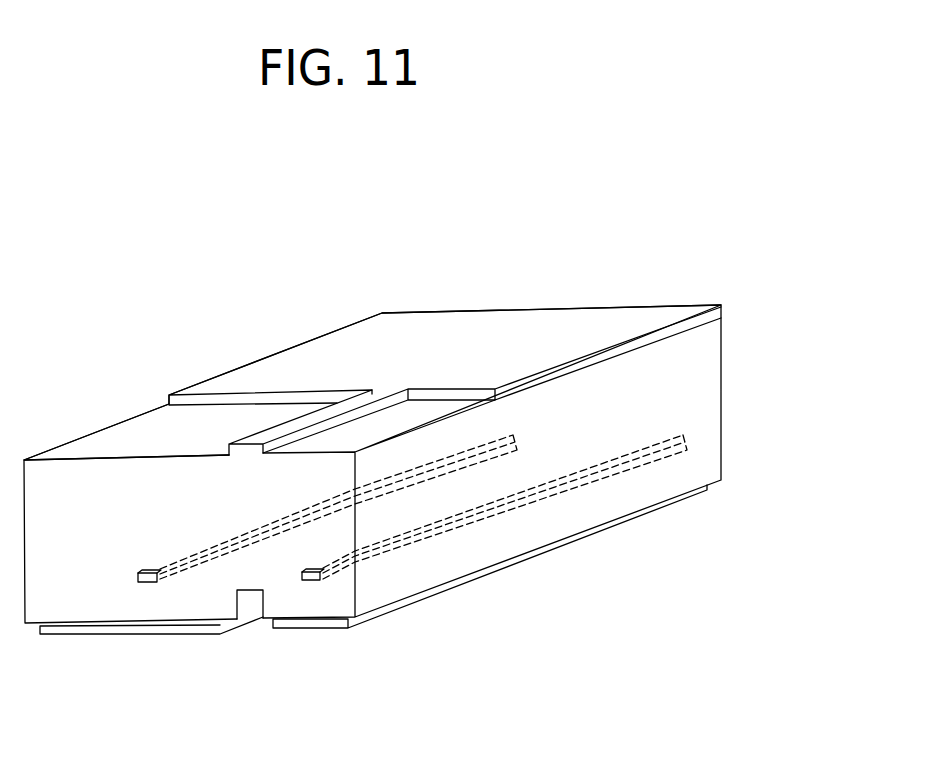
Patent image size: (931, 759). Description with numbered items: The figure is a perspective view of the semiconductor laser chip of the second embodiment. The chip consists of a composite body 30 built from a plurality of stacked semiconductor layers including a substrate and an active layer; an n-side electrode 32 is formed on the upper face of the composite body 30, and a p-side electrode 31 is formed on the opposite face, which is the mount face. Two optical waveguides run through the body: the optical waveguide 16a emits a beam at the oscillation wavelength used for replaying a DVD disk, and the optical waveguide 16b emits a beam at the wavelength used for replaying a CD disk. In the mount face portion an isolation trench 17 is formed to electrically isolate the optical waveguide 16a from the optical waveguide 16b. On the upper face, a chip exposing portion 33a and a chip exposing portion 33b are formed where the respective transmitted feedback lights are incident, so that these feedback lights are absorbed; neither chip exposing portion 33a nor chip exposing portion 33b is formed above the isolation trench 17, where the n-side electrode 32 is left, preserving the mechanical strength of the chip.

The composite body 30 is at (721, 368).
The p-side electrode 31 is at (543, 552).
The n-side electrode 32 is at (312, 357).
The chip exposing portion 33a is at (122, 440).
The chip exposing portion 33b is at (417, 412).
The optical waveguide 16a is at (145, 583).
The optical waveguide 16b is at (306, 583).
The isolation trench 17 is at (245, 607).